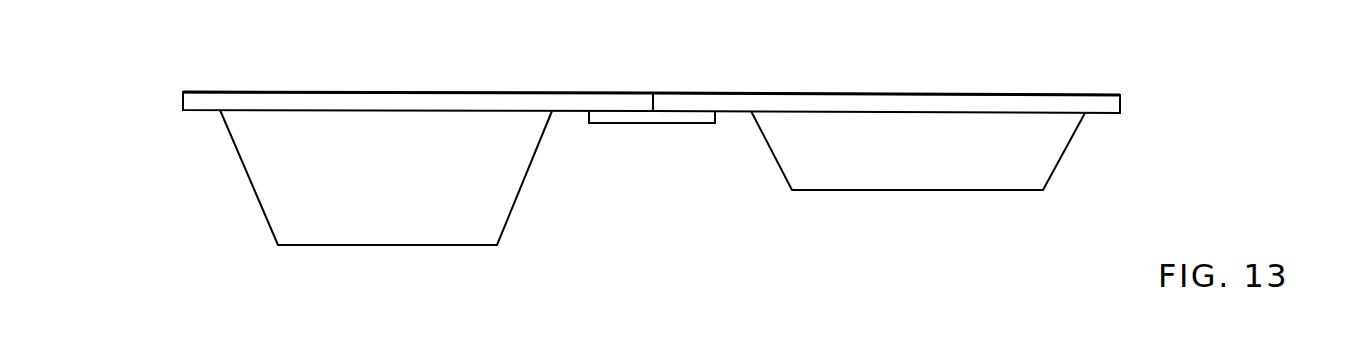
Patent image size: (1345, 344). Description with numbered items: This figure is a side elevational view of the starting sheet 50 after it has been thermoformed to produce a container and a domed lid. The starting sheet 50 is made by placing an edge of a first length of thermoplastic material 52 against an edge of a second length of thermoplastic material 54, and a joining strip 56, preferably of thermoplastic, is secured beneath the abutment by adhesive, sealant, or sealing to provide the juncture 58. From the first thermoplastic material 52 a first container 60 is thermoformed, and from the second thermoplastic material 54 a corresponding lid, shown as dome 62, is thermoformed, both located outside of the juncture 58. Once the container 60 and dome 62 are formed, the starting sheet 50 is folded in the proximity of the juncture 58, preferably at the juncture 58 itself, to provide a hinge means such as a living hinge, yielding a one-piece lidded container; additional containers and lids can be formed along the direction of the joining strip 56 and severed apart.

The starting sheet 50 is at (660, 133).
The first length of thermoplastic material 52 is at (283, 92).
The second length of thermoplastic material 54 is at (979, 94).
The joining strip 56 is at (672, 125).
The juncture 58 is at (589, 83).
The first container 60 is at (245, 177).
The dome 62 is at (1072, 140).